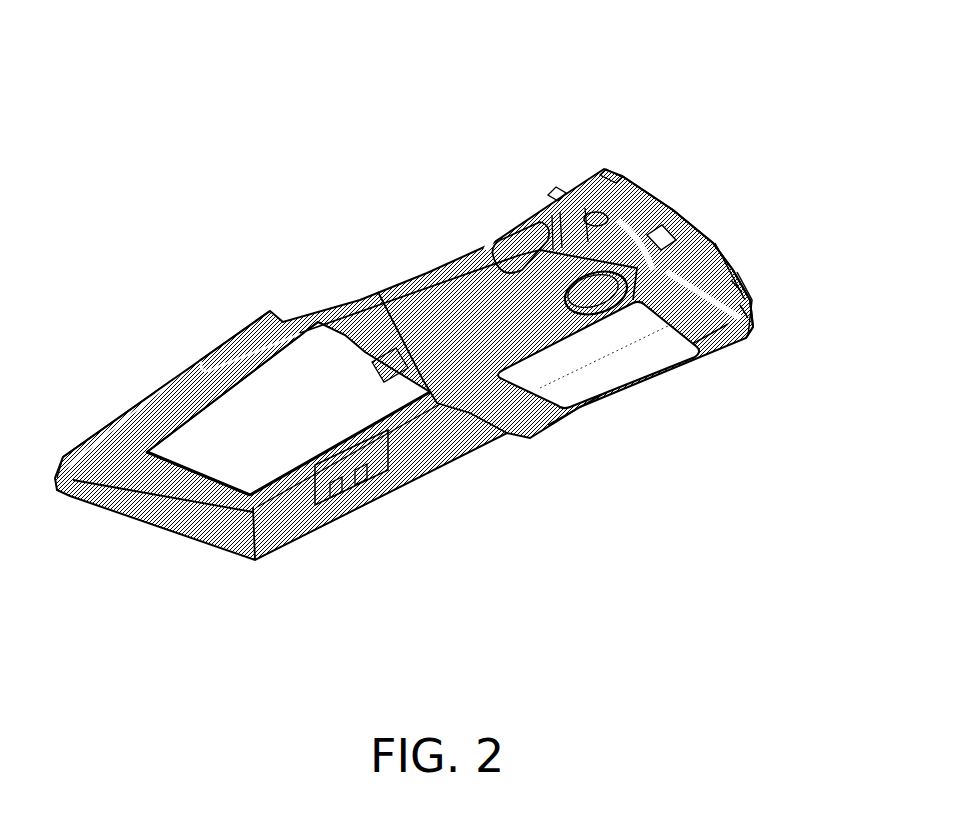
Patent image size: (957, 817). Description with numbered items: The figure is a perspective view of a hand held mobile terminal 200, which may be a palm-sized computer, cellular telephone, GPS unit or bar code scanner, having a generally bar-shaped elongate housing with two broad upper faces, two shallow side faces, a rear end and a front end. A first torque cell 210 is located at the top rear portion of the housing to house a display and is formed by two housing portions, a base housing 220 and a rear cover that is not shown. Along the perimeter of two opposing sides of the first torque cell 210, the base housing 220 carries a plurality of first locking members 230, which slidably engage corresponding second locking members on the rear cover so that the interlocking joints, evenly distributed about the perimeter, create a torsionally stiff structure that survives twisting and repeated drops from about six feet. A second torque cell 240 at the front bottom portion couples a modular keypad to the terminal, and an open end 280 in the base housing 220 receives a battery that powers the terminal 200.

The hand held mobile terminal 200 is at (436, 303).
The first torque cell 210 is at (150, 543).
The base housing 220 is at (603, 398).
The first locking members 230 is at (517, 441).
The second torque cell 240 is at (497, 193).
The open end 280 is at (712, 228).